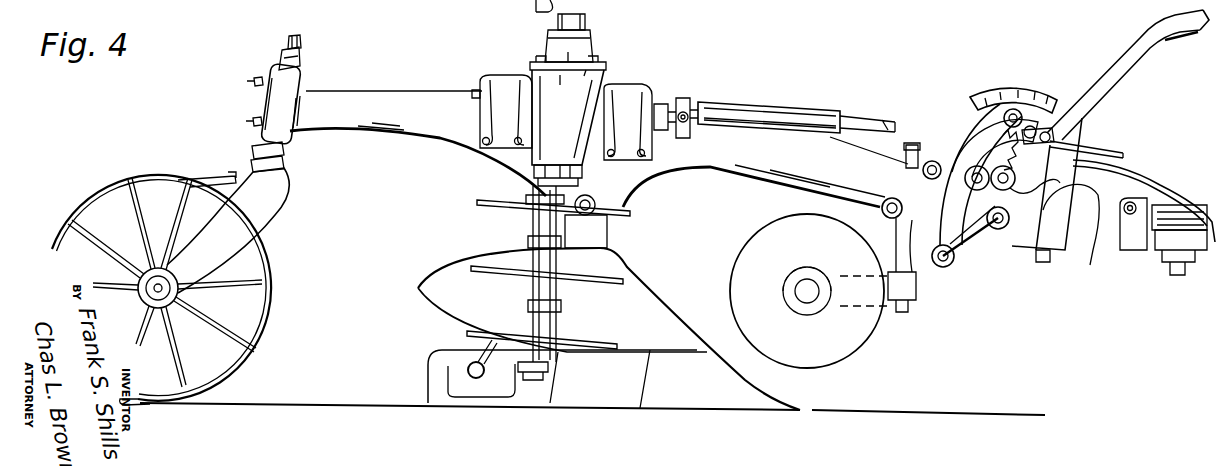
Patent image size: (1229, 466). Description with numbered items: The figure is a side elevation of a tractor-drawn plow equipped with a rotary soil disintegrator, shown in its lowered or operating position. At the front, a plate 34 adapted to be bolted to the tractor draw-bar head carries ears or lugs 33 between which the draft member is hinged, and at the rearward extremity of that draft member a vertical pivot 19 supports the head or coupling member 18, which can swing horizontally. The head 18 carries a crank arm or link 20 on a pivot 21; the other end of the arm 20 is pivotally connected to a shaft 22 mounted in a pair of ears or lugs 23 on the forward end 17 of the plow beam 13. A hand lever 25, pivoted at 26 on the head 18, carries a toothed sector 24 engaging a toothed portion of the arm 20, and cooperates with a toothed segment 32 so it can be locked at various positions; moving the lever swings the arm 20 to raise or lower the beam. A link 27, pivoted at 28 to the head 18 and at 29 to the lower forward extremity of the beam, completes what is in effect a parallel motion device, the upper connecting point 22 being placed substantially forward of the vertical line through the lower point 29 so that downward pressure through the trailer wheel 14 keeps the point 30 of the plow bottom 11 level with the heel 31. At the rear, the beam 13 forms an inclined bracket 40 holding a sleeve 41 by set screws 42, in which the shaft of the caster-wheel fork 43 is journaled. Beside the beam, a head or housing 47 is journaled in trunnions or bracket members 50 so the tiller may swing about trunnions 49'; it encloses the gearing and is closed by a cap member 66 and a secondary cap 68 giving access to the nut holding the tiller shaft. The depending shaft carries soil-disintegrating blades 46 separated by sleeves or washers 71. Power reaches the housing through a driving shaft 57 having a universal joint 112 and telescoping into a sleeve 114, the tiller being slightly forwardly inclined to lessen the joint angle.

The plow bottom 11 is at (638, 408).
The plow beam 13 is at (410, 82).
The trailer wheel 14 is at (135, 178).
The forward end of the plow beam 17 is at (953, 197).
The head or coupling member 18 is at (1072, 255).
The vertical pivot 19 is at (1042, 262).
The crank arm or link 20 is at (980, 138).
The pivot 21 is at (1010, 102).
The shaft 22 is at (968, 170).
The ears or lugs 23 is at (1010, 192).
The toothed sector 24 is at (1040, 165).
The hand lever 25 is at (1135, 42).
The pivot of the hand lever 26 is at (1008, 222).
The link 27 is at (968, 240).
The pivot of the link on the head 28 is at (1000, 236).
The lower connecting point 29 is at (950, 270).
The point of the plow bottom 30 is at (795, 402).
The heel of the plow 31 is at (560, 405).
The toothed segment 32 is at (998, 93).
The ears or lugs 33 is at (1213, 198).
The plate 34 is at (1205, 262).
The inclined bracket member 40 is at (262, 101).
The sleeve 41 is at (302, 62).
The set screws 42 is at (247, 79).
The trailer or caster-wheel fork 43 is at (282, 206).
The soil-disintegrating blades 46 is at (480, 202).
The head or housing 47 is at (574, 146).
The trunnions 49' is at (553, 102).
The trunnions or bracket members 50 is at (484, 127).
The driving shaft 57 is at (864, 118).
The cap member 66 is at (588, 46).
The secondary cap member 68 is at (588, 20).
The sleeves or washers 71 is at (542, 220).
The universal joint 112 is at (676, 95).
The sleeve 114 is at (778, 92).